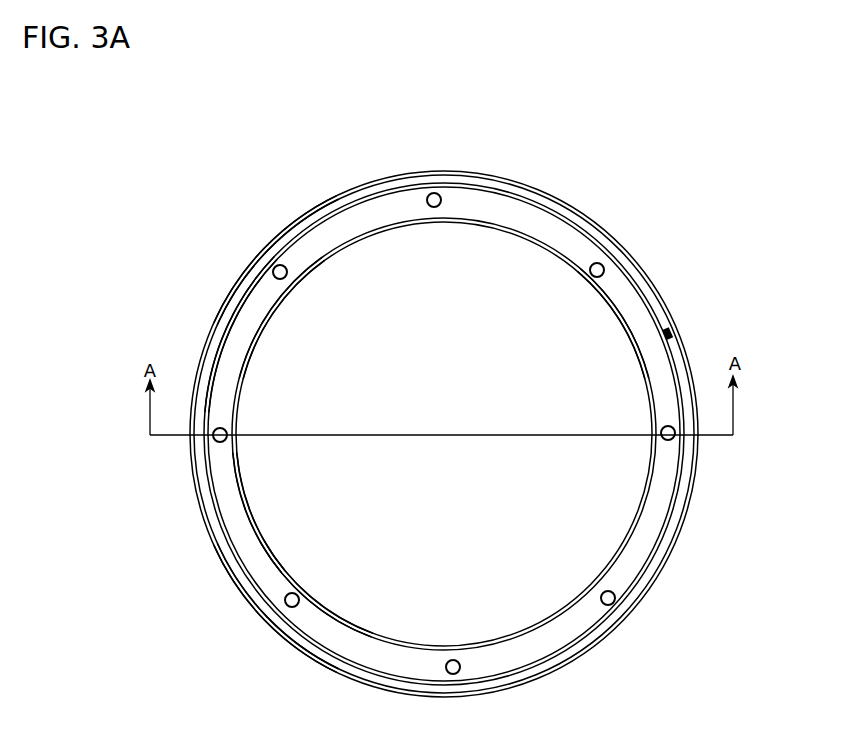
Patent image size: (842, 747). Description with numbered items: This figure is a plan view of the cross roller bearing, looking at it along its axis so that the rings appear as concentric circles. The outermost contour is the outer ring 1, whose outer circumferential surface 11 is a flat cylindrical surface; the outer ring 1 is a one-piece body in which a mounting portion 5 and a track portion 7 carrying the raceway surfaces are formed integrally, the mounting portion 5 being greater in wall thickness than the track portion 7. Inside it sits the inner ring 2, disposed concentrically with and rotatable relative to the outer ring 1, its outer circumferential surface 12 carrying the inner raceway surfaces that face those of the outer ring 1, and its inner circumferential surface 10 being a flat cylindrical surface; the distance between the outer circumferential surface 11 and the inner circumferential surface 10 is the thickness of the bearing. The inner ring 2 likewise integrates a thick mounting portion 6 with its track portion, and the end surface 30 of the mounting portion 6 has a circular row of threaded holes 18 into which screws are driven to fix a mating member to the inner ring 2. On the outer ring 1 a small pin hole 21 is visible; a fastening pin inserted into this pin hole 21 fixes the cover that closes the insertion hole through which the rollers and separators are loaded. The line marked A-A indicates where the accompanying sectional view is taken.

The outer ring 1 is at (688, 521).
The inner ring 2 is at (355, 640).
The mounting portion 5 is at (258, 595).
The mounting portion 6 is at (635, 312).
The track portion 7 is at (655, 572).
The inner circumferential surface 10 is at (275, 297).
The outer circumferential surface 11 is at (262, 247).
The outer circumferential surface 12 is at (232, 313).
The threaded holes 18 is at (445, 200).
The pin hole 21 is at (673, 333).
The end surface 30 is at (232, 517).